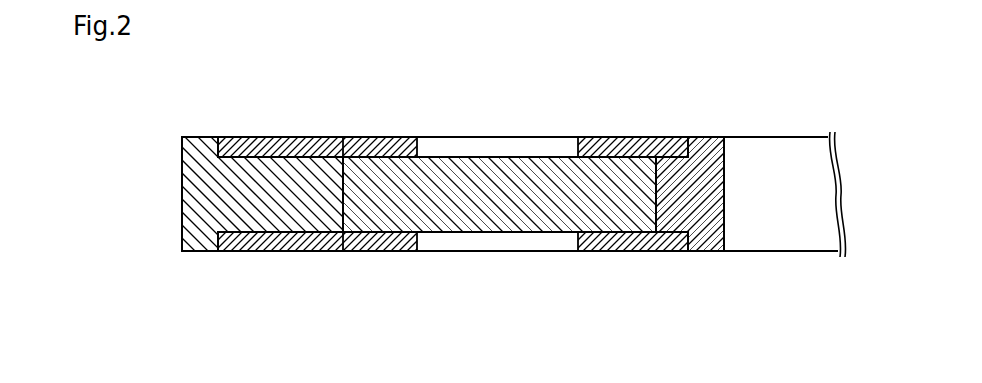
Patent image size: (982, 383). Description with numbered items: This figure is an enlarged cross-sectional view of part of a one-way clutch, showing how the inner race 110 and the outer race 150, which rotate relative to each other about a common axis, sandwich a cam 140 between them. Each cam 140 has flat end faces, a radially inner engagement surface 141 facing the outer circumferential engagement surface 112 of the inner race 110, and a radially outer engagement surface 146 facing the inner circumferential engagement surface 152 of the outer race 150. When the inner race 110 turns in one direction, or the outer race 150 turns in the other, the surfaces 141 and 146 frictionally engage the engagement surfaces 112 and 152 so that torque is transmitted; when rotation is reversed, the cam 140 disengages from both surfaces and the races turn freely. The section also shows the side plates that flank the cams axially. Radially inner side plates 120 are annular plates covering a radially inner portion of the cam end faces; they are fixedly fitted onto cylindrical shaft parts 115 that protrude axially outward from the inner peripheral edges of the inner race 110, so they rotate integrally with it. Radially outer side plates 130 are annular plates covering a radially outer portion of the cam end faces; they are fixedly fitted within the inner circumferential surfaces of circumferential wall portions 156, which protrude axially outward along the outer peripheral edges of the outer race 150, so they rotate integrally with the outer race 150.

The inner race 110 is at (713, 148).
The outer circumferential engagement surface 112 is at (657, 210).
The cylindrical shaft part 115 is at (705, 251).
The radially inner side plate 120 is at (677, 137).
The radially outer side plate 130 is at (293, 137).
The cam 140 is at (463, 137).
The radially inner engagement surface 141 is at (657, 170).
The radially outer engagement surface 146 is at (343, 205).
The outer race 150 is at (203, 137).
The inner circumferential engagement surface 152 is at (358, 137).
The circumferential wall portion 156 is at (203, 251).